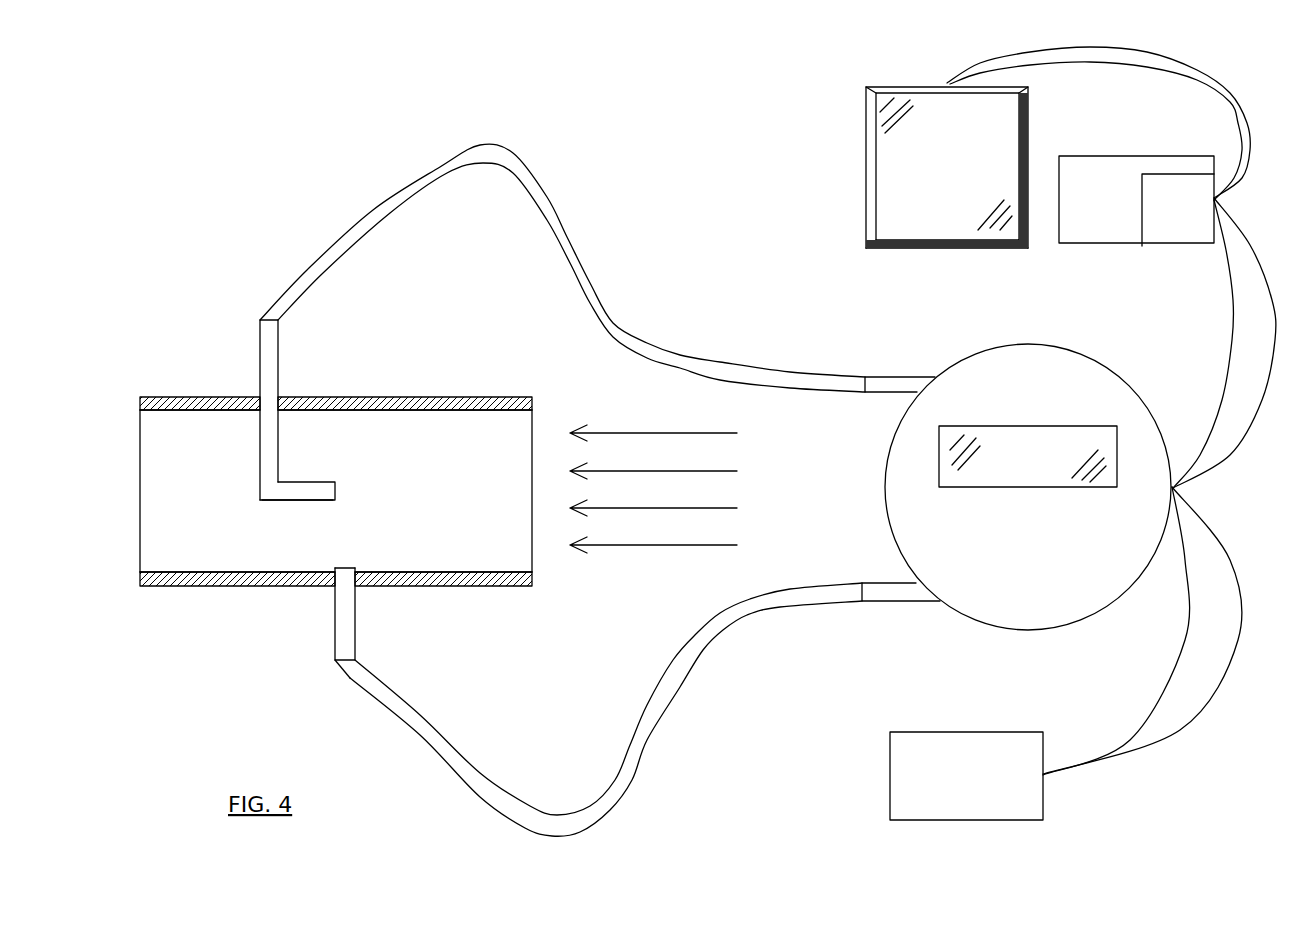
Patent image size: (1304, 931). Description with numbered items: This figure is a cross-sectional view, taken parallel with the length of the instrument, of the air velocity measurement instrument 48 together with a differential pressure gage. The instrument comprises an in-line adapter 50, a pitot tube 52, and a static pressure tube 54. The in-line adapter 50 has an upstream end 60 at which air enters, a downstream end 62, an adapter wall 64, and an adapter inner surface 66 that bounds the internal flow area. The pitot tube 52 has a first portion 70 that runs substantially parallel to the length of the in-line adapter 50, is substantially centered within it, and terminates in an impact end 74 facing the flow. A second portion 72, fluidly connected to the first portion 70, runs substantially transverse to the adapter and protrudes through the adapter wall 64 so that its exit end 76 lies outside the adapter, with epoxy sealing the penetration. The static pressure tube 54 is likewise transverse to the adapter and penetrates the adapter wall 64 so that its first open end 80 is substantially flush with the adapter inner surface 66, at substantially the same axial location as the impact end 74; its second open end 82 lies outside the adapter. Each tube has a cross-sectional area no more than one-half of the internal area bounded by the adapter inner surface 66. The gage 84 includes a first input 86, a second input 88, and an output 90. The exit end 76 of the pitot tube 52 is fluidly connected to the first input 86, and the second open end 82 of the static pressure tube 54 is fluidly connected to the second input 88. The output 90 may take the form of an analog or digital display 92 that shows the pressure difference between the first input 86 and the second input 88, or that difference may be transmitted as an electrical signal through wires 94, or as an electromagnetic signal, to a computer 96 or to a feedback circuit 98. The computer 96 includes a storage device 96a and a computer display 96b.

The air velocity measurement instrument 48 is at (203, 280).
The in-line adapter 50 is at (360, 396).
The pitot tube 52 is at (278, 356).
The static pressure tube 54 is at (358, 614).
The upstream end 60 is at (535, 432).
The downstream end 62 is at (140, 460).
The adapter wall 64 is at (462, 398).
The adapter inner surface 66 is at (385, 410).
The first portion 70 is at (292, 502).
The second portion 72 is at (260, 368).
The impact end 74 is at (334, 490).
The exit end 76 is at (288, 318).
The first open end 80 is at (340, 572).
The second open end 82 is at (342, 678).
The gage 84 is at (860, 296).
The first input 86 is at (856, 371).
The second input 88 is at (866, 602).
The output 90 is at (1024, 346).
The analog or digital display 92 is at (1022, 488).
The wires 94 is at (1248, 494).
The computer 96 is at (1120, 156).
The storage device 96a is at (1178, 210).
The computer display 96b is at (947, 167).
The feedback circuit 98 is at (957, 822).